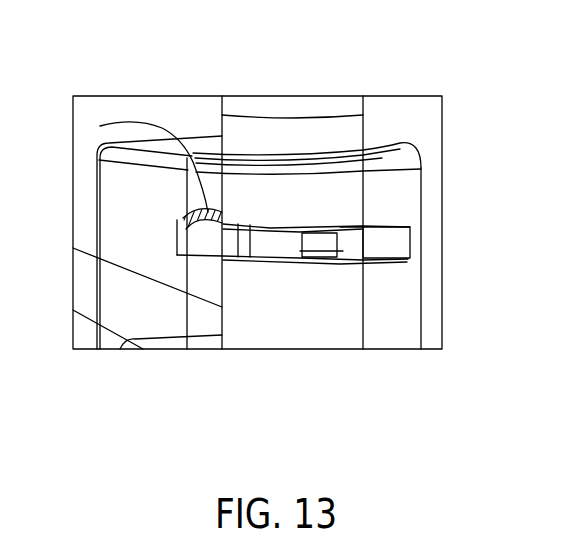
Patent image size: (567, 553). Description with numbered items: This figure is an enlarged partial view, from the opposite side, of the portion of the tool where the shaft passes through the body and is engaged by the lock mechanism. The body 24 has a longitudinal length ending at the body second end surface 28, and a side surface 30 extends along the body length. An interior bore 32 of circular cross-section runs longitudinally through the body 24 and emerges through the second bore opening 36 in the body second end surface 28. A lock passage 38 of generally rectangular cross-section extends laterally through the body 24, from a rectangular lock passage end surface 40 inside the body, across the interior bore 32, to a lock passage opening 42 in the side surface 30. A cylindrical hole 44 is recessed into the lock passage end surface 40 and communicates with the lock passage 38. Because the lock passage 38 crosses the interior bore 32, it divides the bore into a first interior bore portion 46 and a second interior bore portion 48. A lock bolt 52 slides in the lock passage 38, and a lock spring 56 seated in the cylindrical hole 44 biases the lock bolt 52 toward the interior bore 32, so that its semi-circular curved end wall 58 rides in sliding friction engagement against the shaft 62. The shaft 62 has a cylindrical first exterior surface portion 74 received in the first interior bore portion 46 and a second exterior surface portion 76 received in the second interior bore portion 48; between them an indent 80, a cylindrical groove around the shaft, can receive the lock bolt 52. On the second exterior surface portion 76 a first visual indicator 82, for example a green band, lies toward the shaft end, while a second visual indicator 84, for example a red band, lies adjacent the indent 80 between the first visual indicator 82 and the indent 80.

The body 24 is at (408, 185).
The body second end surface 28 is at (398, 143).
The side surface 30 is at (419, 320).
The interior bore 32 is at (360, 296).
The second bore opening 36 is at (365, 130).
The lock passage 38 is at (397, 242).
The lock passage end surface 40 is at (184, 235).
The lock passage opening 42 is at (422, 261).
The cylindrical hole 44 is at (100, 126).
The first interior bore portion 46 is at (357, 337).
The second interior bore portion 48 is at (360, 197).
The lock bolt 52 is at (186, 204).
The lock spring 56 is at (185, 205).
The curved end wall 58 is at (222, 262).
The shaft 62 is at (258, 248).
The first exterior surface portion 74 is at (287, 337).
The second exterior surface portion 76 is at (288, 107).
The indent 80 is at (362, 238).
The first visual indicator 82 is at (325, 105).
The second visual indicator 84 is at (357, 143).